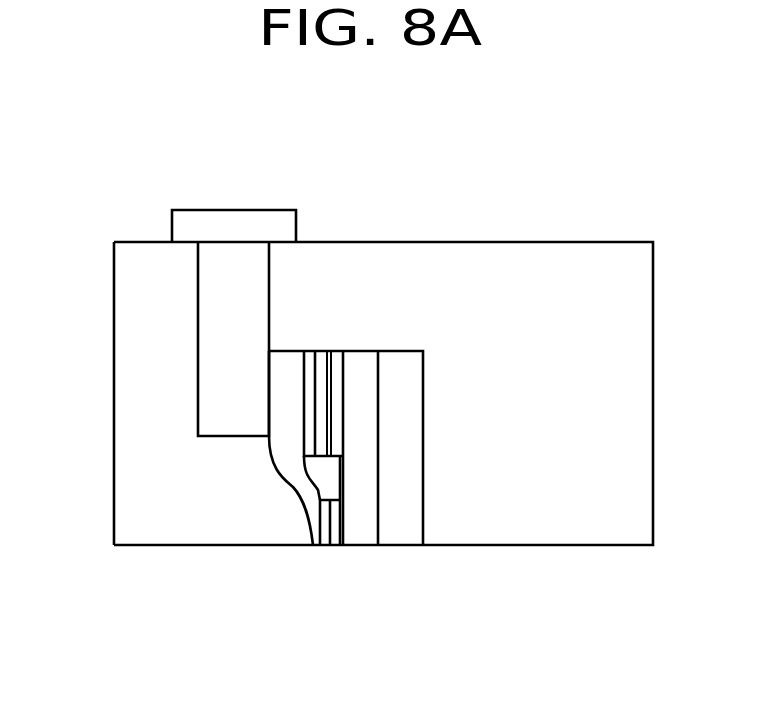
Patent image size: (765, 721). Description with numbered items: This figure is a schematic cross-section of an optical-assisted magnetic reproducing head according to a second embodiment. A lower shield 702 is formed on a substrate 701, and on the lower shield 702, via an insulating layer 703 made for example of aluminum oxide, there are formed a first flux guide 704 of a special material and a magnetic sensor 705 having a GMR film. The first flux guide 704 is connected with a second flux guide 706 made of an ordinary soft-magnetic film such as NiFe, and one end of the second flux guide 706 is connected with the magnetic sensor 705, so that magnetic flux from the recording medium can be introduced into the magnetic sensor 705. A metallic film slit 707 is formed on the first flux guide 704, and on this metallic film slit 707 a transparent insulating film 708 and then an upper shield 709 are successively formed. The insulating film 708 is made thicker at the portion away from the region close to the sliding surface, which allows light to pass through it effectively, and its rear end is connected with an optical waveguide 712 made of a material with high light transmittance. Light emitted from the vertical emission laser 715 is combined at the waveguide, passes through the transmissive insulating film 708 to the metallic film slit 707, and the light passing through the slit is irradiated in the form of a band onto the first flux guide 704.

The substrate 701 is at (586, 530).
The lower shield 702 is at (403, 527).
The insulating layer 703 is at (360, 532).
The first flux guide 704 is at (332, 547).
The magnetic sensor 705 is at (325, 360).
The second flux guide 706 is at (285, 360).
The metallic film slit 707 is at (322, 543).
The insulating film 708 is at (297, 513).
The upper shield 709 is at (132, 468).
The optical waveguide 712 is at (217, 302).
The vertical emission laser 715 is at (235, 220).